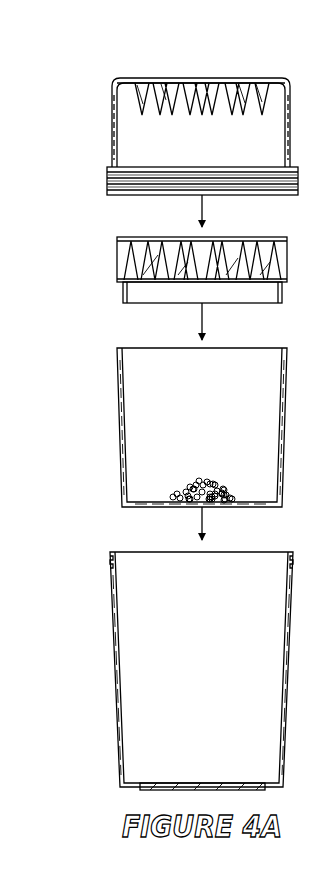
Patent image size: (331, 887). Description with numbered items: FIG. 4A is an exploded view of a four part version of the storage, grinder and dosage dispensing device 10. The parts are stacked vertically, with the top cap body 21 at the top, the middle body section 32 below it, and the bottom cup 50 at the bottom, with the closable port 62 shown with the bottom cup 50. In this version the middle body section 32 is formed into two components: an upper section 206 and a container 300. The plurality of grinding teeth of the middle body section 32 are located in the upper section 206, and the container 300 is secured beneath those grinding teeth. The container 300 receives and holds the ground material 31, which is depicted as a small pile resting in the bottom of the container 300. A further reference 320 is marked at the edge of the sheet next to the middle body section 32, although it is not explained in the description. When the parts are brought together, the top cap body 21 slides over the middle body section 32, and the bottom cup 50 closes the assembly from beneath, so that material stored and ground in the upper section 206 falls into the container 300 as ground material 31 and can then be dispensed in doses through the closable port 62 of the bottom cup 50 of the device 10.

The storage, grinder and dosage dispensing device 10 is at (95, 103).
The top cap body 21 is at (290, 129).
The middle body section 32 is at (70, 257).
The insert member 320 is at (324, 314).
The upper section 206 is at (287, 262).
The container 300 is at (285, 427).
The ground material 31 is at (222, 487).
The bottom cup 50 is at (291, 666).
The closable port 62 is at (212, 785).